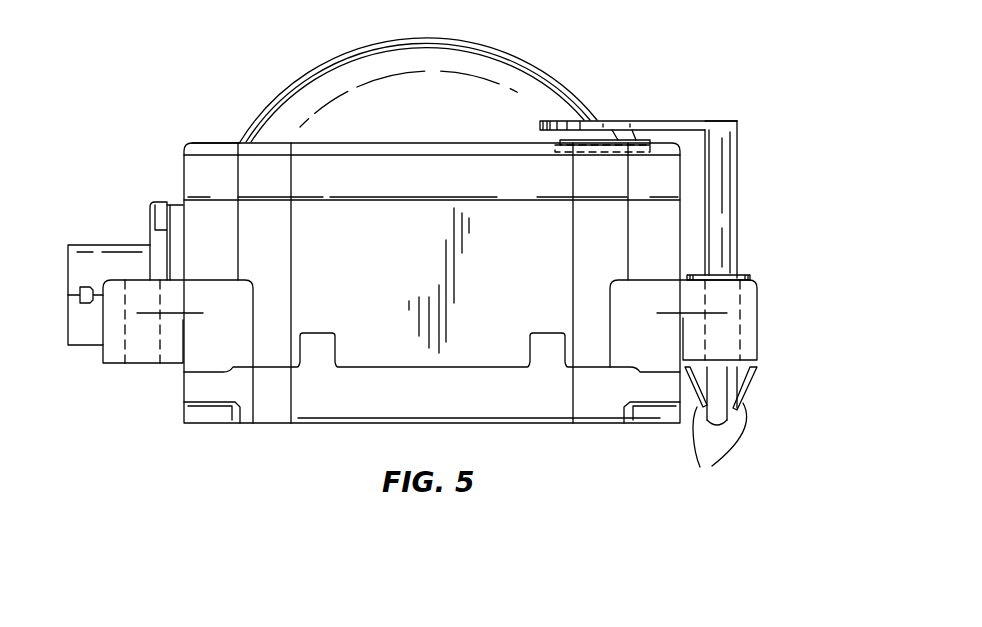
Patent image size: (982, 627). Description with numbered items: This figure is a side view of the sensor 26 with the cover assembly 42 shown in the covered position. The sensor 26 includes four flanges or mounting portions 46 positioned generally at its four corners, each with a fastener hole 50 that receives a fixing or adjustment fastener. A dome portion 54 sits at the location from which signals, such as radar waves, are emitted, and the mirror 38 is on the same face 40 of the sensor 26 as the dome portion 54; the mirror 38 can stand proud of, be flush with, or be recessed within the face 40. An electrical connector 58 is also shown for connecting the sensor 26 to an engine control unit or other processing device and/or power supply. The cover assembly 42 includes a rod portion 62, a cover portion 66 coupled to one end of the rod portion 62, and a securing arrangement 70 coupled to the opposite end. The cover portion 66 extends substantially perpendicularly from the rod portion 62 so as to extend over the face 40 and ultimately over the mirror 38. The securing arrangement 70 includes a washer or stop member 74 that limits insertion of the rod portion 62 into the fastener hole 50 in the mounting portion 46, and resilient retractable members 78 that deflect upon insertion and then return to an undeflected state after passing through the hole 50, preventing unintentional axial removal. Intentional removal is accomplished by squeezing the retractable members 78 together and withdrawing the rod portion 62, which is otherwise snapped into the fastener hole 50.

The sensor 26 is at (185, 177).
The mirror 38 is at (637, 140).
The face 40 is at (220, 142).
The cover assembly 42 is at (737, 90).
The mounting portion 46 is at (103, 328).
The fastener hole 50 is at (156, 347).
The dome portion 54 is at (517, 55).
The electrical connector 58 is at (100, 245).
The rod portion 62 is at (728, 170).
The cover portion 66 is at (623, 119).
The securing arrangement 70 is at (768, 385).
The stop member 74 is at (748, 275).
The retractable members 78 is at (710, 463).